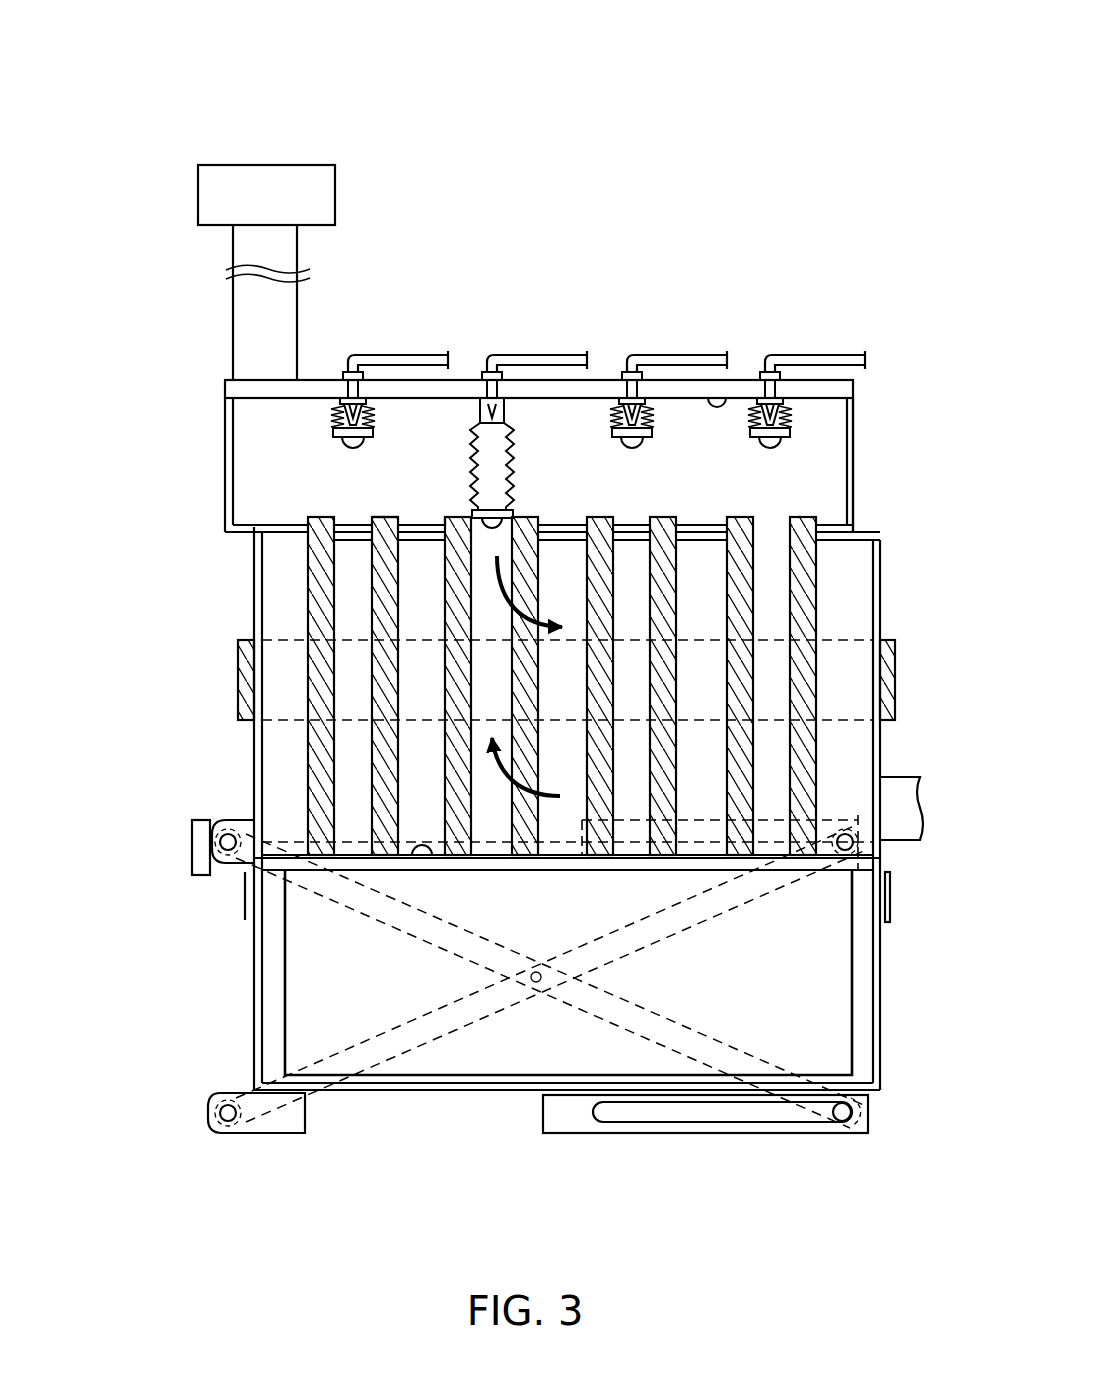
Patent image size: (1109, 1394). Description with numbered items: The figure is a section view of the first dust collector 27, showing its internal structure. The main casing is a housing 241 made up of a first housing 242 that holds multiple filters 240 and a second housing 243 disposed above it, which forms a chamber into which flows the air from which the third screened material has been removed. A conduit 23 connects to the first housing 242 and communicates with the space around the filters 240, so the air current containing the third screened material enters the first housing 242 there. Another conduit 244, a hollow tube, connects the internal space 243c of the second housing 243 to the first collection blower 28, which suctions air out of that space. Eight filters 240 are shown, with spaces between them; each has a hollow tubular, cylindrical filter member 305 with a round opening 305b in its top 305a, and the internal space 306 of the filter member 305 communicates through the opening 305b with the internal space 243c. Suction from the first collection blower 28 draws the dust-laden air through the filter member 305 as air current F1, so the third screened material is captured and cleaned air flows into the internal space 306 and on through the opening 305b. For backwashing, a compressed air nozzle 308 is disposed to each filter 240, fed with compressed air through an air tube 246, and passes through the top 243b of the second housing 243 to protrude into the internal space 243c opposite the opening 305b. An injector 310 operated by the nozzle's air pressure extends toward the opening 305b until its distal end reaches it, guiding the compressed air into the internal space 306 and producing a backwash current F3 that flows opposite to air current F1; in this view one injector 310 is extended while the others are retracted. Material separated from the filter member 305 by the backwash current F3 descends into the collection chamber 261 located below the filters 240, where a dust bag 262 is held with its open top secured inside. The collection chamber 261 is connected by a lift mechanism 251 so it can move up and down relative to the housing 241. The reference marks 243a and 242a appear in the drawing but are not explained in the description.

The first dust collector 27 is at (562, 78).
The first collection blower 28 is at (300, 165).
The conduit 244 is at (300, 298).
The housing 241 is at (130, 511).
The second housing 243 is at (220, 494).
The opening of upper casing 243a is at (418, 524).
The top of the second housing 243b is at (722, 404).
The internal space of the second housing 243c is at (835, 455).
The first housing 242 is at (250, 620).
The drain hole 242a is at (420, 848).
The filter member 305 is at (683, 605).
The top of the filter member 305a is at (318, 557).
The opening 305b is at (355, 511).
The filter 240 is at (306, 565).
The internal space of the filter member 306 is at (765, 785).
The air tube 246 is at (447, 356).
The compressed air nozzle 308 is at (345, 385).
The injector 310 is at (320, 412).
The conduit 23 is at (908, 777).
The collection chamber 261 is at (250, 1050).
The dust bag 262 is at (283, 996).
The lift mechanism 251 is at (882, 1140).
The air current F1 is at (497, 830).
The backwash current F3 is at (553, 740).